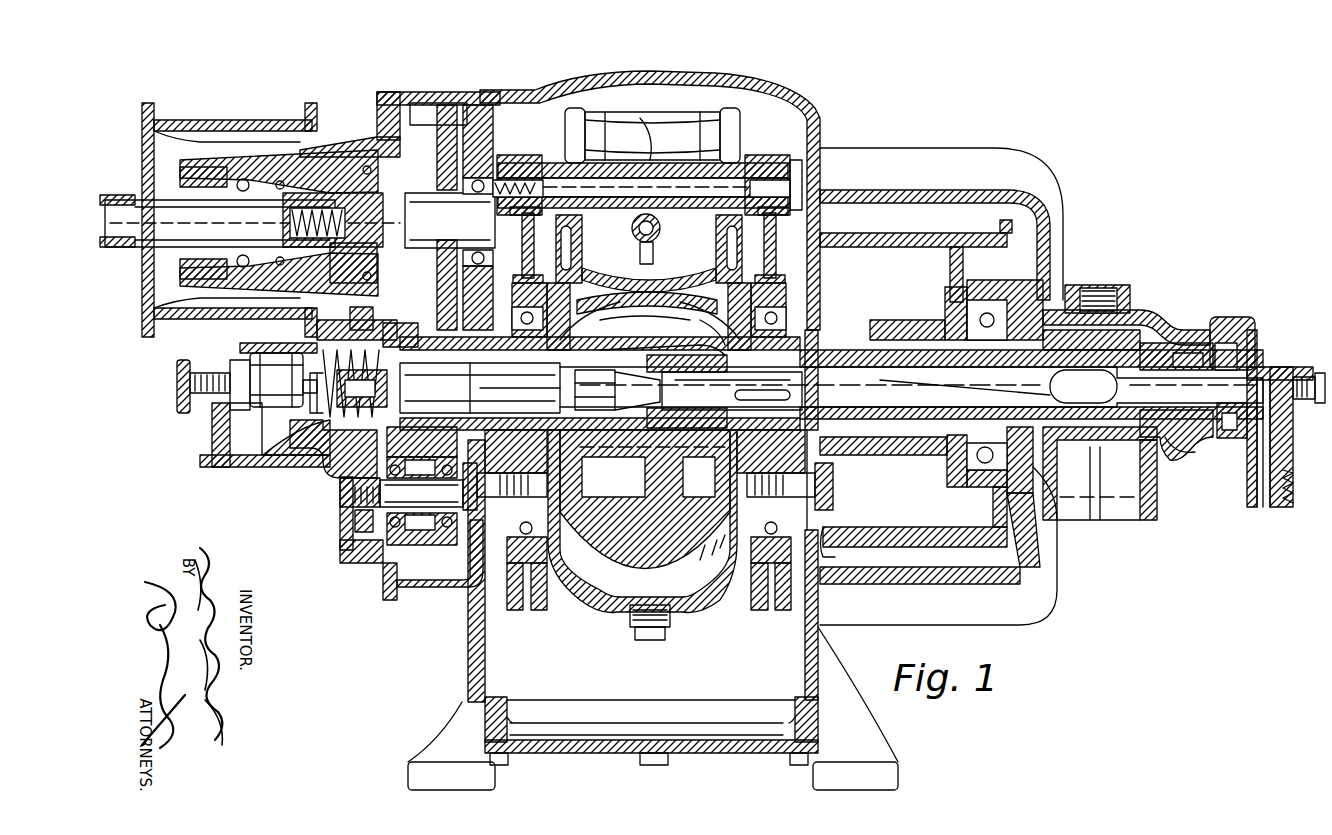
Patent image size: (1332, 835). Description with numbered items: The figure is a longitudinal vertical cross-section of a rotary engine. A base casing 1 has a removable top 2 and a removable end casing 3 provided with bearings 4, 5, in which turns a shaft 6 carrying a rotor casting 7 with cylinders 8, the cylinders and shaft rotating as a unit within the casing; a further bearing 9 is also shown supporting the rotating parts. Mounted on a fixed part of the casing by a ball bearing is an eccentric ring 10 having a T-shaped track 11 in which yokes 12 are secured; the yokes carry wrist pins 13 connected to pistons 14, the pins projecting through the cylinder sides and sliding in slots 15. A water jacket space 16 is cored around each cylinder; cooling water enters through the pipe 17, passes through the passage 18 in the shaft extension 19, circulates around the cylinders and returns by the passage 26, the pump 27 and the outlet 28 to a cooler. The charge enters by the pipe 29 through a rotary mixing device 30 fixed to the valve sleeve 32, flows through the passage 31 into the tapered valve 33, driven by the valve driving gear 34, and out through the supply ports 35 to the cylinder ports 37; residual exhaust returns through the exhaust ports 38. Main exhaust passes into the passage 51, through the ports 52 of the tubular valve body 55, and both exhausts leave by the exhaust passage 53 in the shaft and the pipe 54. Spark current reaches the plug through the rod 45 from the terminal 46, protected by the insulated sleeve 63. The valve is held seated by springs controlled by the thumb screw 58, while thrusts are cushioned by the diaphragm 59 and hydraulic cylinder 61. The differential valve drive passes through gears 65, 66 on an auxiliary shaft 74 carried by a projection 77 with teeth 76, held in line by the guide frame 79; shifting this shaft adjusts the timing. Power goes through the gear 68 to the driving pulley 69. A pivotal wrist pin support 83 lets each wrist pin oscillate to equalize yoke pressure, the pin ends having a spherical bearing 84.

The base casing 1 is at (818, 680).
The removable top 2 is at (528, 98).
The removable end casing 3 is at (992, 163).
The bearing 4 is at (990, 305).
The bearing 5 is at (540, 500).
The shaft 6 is at (897, 437).
The rotor casting 7 is at (598, 605).
The cylinders 8 is at (610, 125).
The lower bearing support 9 is at (520, 565).
The eccentric ring 10 is at (512, 302).
The T-shaped track 11 is at (585, 258).
The yokes 12 is at (522, 230).
The wrist pins 13 is at (565, 172).
The pistons 14 is at (672, 280).
The slots 15 is at (720, 128).
The water jacket space 16 is at (680, 592).
The pipe 17 is at (1270, 452).
The passage 18 is at (1192, 405).
The shaft extension 19 is at (920, 355).
The passage 26 is at (950, 428).
The pump 27 is at (1235, 342).
The outlet 28 is at (1108, 285).
The pipe 29 is at (240, 467).
The rotary mixing device 30 is at (408, 383).
The passage 31 is at (482, 412).
The valve sleeve 32 is at (490, 363).
The tapered valve 33 is at (655, 366).
The valve driving gear 34 is at (383, 338).
The supply ports 35 is at (650, 375).
The cylinder ports 37 is at (645, 306).
The exhaust ports 38 is at (700, 390).
The rod 45 is at (310, 415).
The terminal 46 is at (313, 450).
The passage 51 is at (710, 325).
The ports 52 is at (765, 395).
The exhaust passage 53 is at (895, 390).
The pipe 54 is at (1115, 512).
The tubular valve body 55 is at (790, 372).
The thumb screw 58 is at (178, 356).
The diaphragm 59 is at (235, 360).
The hydraulic cylinder 61 is at (283, 365).
The insulated sleeve 63 is at (492, 398).
The gear 65 is at (445, 550).
The gear 66 is at (385, 578).
The gear 68 is at (440, 108).
The driving pulley 69 is at (235, 125).
The auxiliary shaft 74 is at (345, 498).
The teeth 76 is at (300, 300).
The projection 77 is at (340, 488).
The guide frame 79 is at (355, 525).
The pivotal wrist pin support 83 is at (662, 228).
The spherical bearing 84 is at (525, 163).